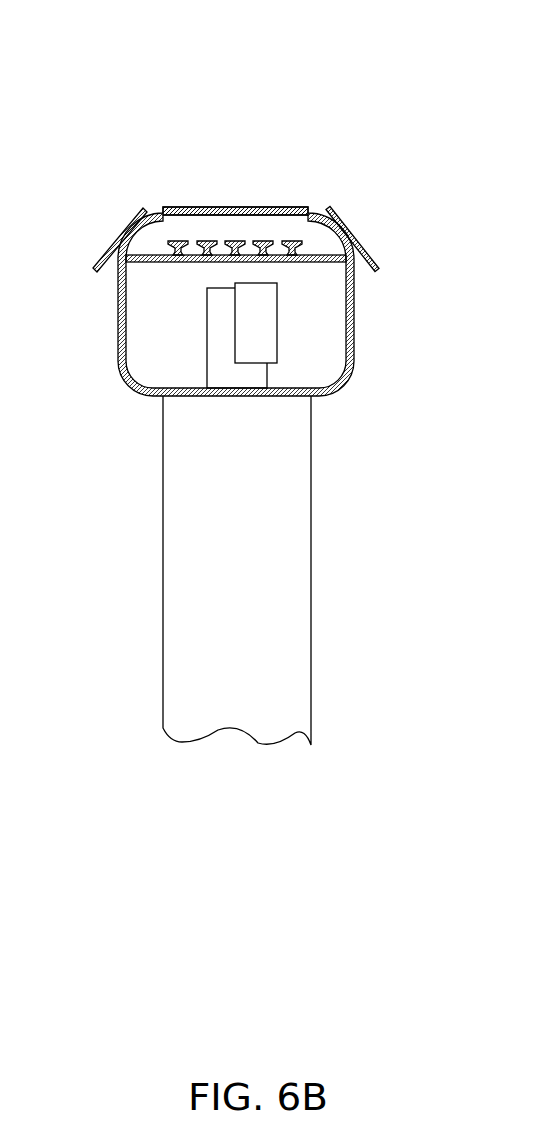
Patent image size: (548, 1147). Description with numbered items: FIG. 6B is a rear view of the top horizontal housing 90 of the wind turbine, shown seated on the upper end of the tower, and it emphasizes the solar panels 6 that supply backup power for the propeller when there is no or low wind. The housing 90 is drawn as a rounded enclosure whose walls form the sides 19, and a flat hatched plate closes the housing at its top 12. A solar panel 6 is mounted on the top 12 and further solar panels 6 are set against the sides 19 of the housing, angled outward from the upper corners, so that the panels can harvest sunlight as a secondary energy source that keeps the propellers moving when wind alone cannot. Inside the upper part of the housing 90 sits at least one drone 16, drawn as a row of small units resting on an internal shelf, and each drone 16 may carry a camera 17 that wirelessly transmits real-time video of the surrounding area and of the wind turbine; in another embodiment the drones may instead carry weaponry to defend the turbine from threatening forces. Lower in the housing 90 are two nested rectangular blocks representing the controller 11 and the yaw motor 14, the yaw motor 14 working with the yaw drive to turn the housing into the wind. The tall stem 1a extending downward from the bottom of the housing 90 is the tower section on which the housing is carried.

The top horizontal housing 90 is at (172, 96).
The sides of the housing 19 is at (118, 335).
The top of the housing 12 is at (300, 208).
The solar panel 6 is at (138, 213).
The drone 16 is at (223, 204).
The camera 17 is at (240, 240).
The yaw motor 14 is at (254, 380).
The controller 11 is at (270, 300).
The handle 1a is at (275, 542).